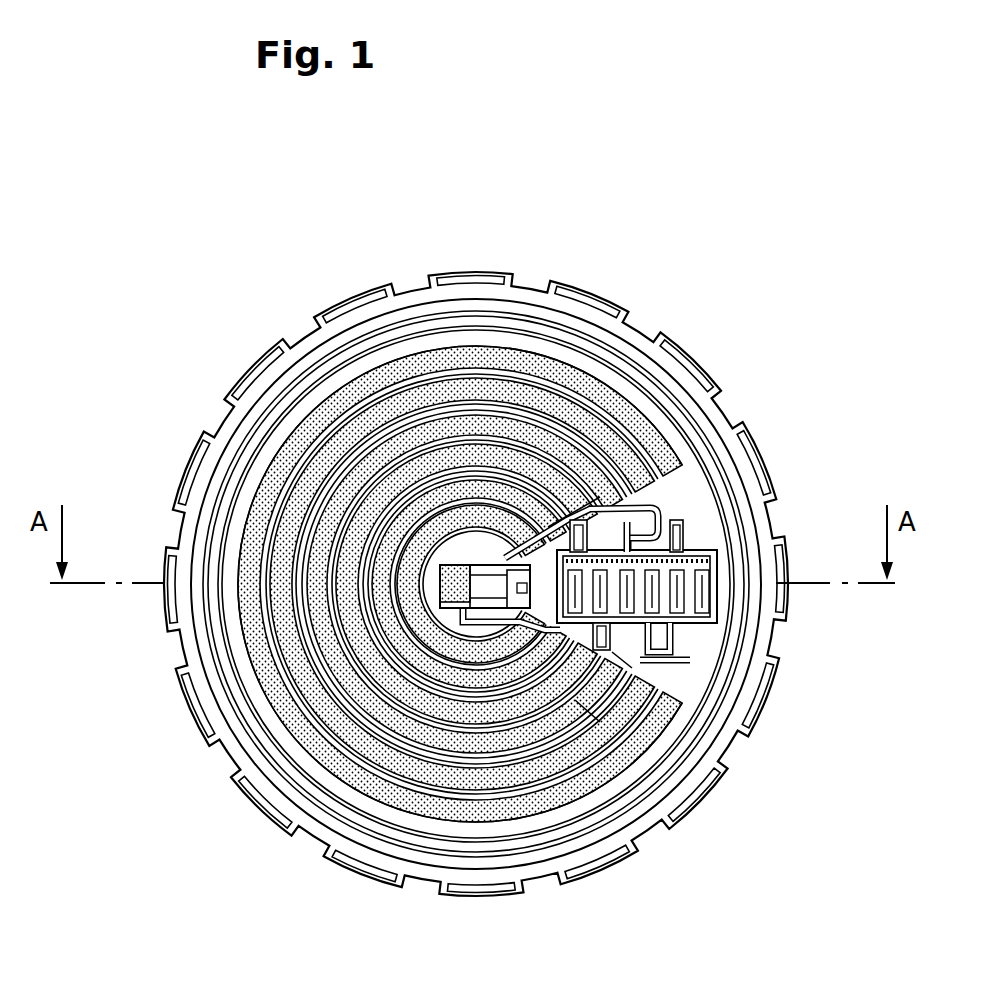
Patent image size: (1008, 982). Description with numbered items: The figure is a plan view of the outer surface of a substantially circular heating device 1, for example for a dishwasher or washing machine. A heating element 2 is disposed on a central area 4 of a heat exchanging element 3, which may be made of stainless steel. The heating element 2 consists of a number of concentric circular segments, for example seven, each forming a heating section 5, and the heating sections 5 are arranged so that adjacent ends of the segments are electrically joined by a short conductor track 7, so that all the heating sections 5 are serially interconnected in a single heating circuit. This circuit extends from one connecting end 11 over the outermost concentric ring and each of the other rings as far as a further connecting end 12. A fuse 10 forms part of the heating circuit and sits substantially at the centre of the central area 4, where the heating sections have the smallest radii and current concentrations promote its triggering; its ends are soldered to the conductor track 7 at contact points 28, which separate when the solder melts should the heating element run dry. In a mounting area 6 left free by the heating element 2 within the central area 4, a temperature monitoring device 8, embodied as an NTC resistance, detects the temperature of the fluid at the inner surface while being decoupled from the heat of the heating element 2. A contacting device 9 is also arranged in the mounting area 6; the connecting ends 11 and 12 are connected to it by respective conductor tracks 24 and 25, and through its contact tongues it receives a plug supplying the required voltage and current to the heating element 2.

The heating device 1 is at (592, 243).
The heating element 2 is at (288, 455).
The heat exchanging element 3 is at (700, 393).
The central area 4 is at (238, 675).
The heating section 5 is at (402, 698).
The mounting area 6 is at (698, 662).
The conductor track 7 is at (562, 482).
The temperature monitoring device 8 is at (684, 643).
The contacting device 9 is at (728, 589).
The fuse 10 is at (493, 622).
The connecting end 11 is at (667, 507).
The further connecting end 12 is at (522, 648).
The conductor track 24 is at (678, 516).
The conductor track 25 is at (588, 712).
The contact points 28 is at (478, 566).